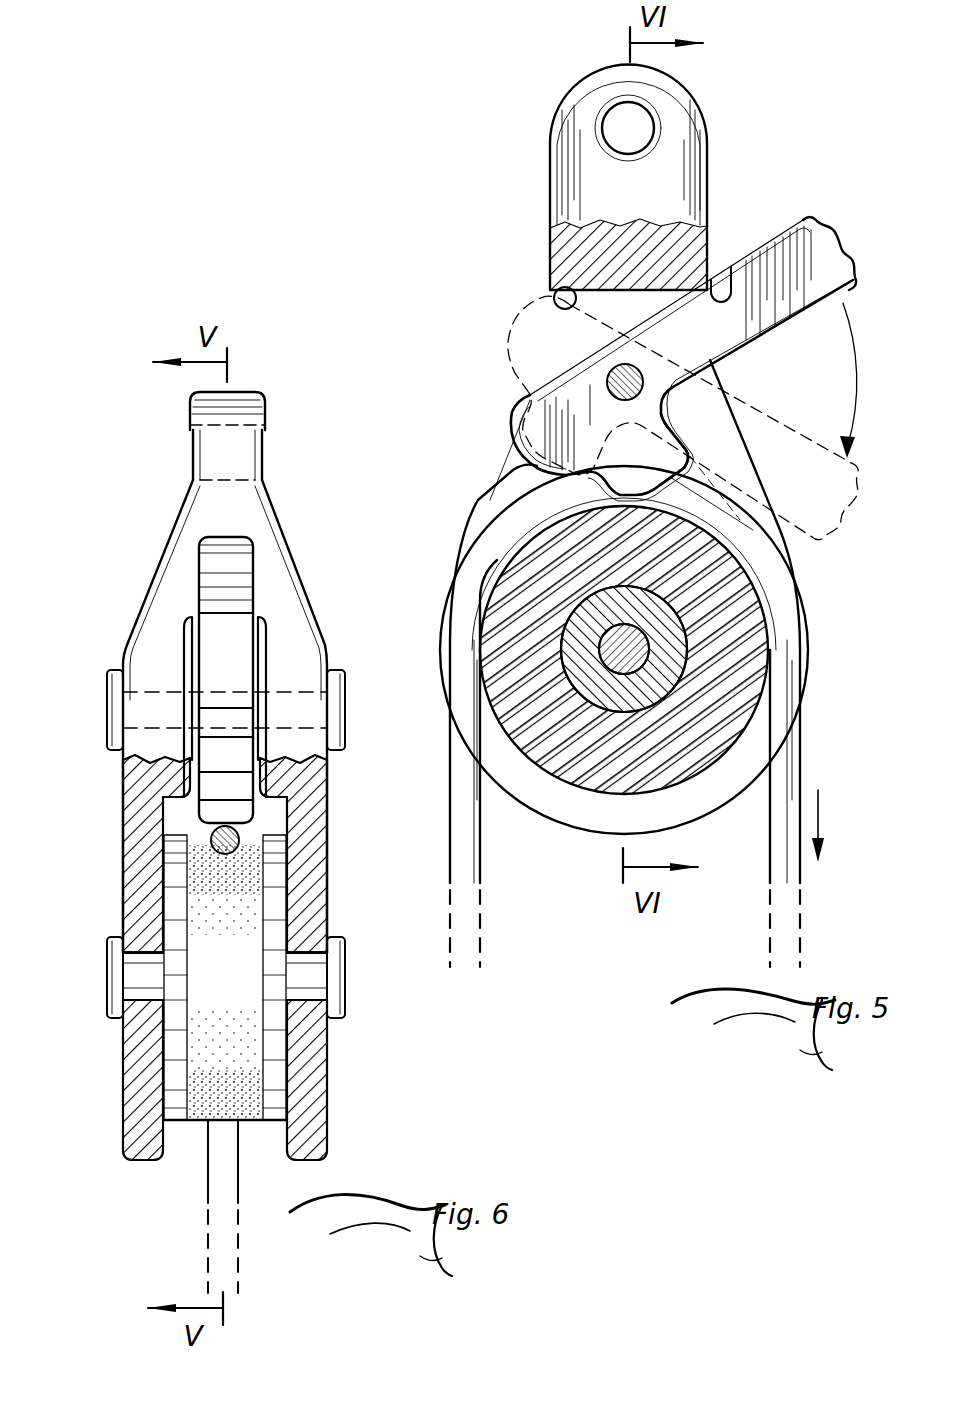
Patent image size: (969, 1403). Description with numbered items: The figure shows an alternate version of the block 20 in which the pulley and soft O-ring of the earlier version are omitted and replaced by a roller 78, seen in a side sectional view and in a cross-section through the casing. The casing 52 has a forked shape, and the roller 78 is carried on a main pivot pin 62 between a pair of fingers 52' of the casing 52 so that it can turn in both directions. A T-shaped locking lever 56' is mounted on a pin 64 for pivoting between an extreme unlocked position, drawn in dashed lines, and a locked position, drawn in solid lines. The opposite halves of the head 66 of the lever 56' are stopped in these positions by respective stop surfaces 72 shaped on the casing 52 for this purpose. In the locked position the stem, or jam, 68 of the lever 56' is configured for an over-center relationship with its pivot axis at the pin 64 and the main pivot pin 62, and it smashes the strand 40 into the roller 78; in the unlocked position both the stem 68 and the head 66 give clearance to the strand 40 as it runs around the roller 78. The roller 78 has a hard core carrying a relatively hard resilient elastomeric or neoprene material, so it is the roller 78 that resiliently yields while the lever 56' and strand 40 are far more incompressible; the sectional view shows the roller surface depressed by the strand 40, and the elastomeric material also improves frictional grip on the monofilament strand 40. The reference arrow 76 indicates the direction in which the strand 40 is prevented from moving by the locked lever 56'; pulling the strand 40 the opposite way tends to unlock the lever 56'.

In FIG. 5, the block 20 is at (538, 132).
In FIG. 6, the block 20 is at (158, 506).
In FIG. 5, the strand 40 is at (458, 727).
In FIG. 6, the strand 40 is at (240, 832).
In FIG. 5, the casing 52 is at (653, 178).
In FIG. 6, the casing 52 is at (225, 659).
In FIG. 6, the fingers 52' is at (222, 1080).
In FIG. 5, the locking lever 56' is at (693, 403).
In FIG. 6, the locking lever 56' is at (276, 680).
In FIG. 5, the main pivot pin 62 is at (588, 612).
In FIG. 6, the main pivot pin 62 is at (117, 937).
In FIG. 5, the pin 64 is at (612, 372).
In FIG. 6, the pin 64 is at (113, 670).
In FIG. 5, the head 66 is at (537, 417).
In FIG. 5, the stem 68 is at (717, 413).
In FIG. 5, the stop surfaces 72 is at (571, 288).
In FIG. 5, the reference arrow 76 is at (820, 790).
In FIG. 6, the roller 78 is at (212, 1103).